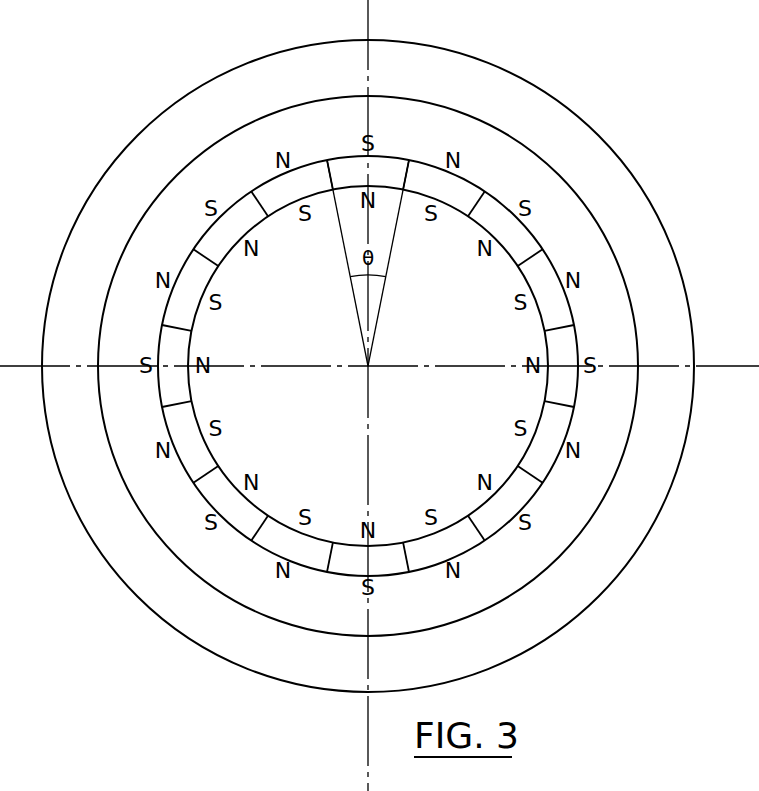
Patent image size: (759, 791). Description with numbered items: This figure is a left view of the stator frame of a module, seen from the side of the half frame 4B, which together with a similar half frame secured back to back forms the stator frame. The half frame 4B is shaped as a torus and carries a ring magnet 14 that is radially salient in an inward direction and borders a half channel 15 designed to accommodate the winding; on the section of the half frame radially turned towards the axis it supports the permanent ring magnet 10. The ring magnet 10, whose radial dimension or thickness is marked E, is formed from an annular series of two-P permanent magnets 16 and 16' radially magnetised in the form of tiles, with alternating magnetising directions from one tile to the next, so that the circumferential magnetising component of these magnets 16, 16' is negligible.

The half frame 4B is at (605, 138).
The half channel 15 is at (486, 128).
The ring magnet 14 is at (528, 238).
The ring magnet 10 is at (533, 317).
The permanent magnets 16 is at (416, 373).
The permanent magnets 16' is at (431, 508).
The radial dimension E is at (262, 503).